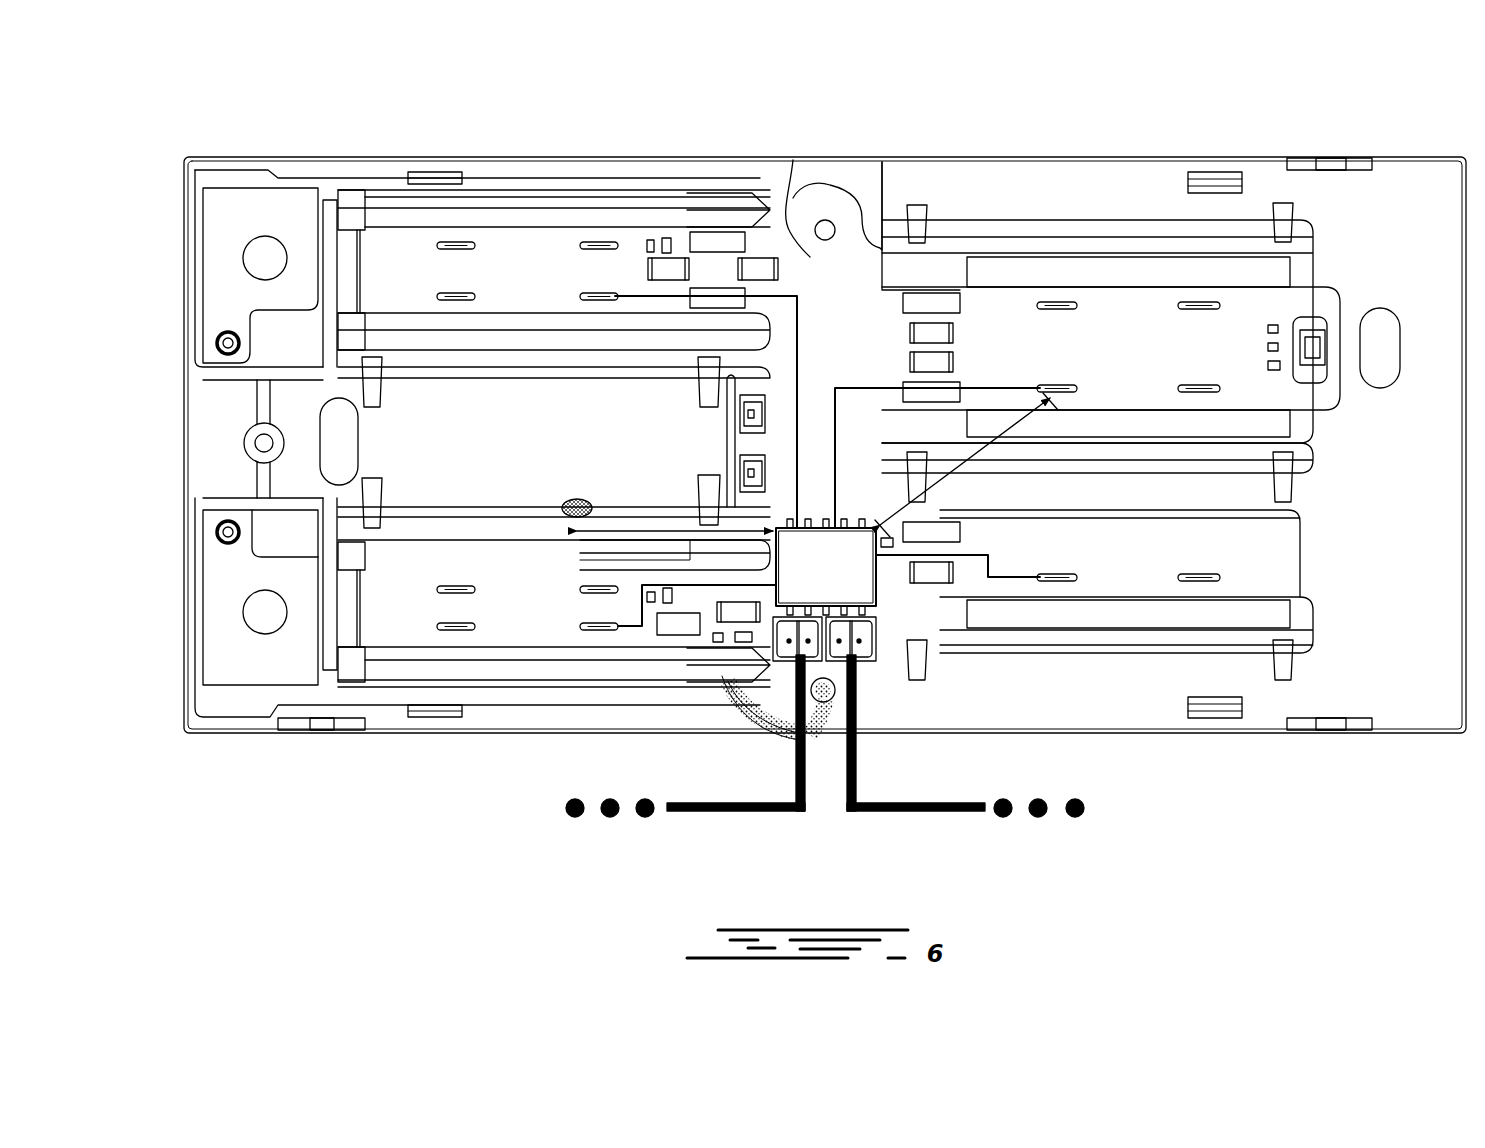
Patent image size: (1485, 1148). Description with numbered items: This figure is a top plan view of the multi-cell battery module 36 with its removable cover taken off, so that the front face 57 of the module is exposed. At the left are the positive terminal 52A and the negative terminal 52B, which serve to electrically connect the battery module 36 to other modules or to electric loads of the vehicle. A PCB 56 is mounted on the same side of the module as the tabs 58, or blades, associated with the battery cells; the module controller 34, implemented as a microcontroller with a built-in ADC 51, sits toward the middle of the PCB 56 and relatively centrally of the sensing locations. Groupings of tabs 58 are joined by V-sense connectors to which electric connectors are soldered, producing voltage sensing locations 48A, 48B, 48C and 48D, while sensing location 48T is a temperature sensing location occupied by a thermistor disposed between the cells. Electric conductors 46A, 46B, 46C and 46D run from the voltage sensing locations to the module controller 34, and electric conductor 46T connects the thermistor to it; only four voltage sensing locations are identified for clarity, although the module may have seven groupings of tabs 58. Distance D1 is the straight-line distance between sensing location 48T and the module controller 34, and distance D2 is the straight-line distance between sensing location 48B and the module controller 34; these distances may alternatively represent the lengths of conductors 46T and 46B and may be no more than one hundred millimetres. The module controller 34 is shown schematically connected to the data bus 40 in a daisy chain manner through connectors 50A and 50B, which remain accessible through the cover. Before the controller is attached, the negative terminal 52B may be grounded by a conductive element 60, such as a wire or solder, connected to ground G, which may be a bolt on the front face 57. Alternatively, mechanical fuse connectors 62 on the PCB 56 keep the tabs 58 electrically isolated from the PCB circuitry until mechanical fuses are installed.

The battery module 36 is at (295, 118).
The positive terminal 52A is at (232, 227).
The negative terminal 52B is at (237, 580).
The electric conductor 46A is at (664, 296).
The electric conductor 46B is at (1003, 388).
The electric conductor 46C is at (622, 627).
The electric conductor 46D is at (1002, 580).
The electric conductor 46T is at (575, 556).
The voltage sensing location 48A is at (598, 292).
The voltage sensing location 48B is at (1055, 388).
The voltage sensing location 48C is at (593, 625).
The voltage sensing location 48D is at (1063, 580).
The temperature sensing location 48T is at (576, 499).
The PCB 56 is at (808, 255).
The front face 57 is at (830, 172).
The tabs 58 is at (400, 345).
The module controller 34 is at (834, 567).
The ADC 51 is at (790, 583).
The connector 50A is at (787, 646).
The connector 50B is at (860, 654).
The conductive element 60 is at (795, 675).
The mechanical fuse connector 62 is at (683, 630).
The data bus 40 is at (790, 812).
The ground G is at (852, 735).
The distance D1 is at (666, 520).
The distance D2 is at (966, 465).